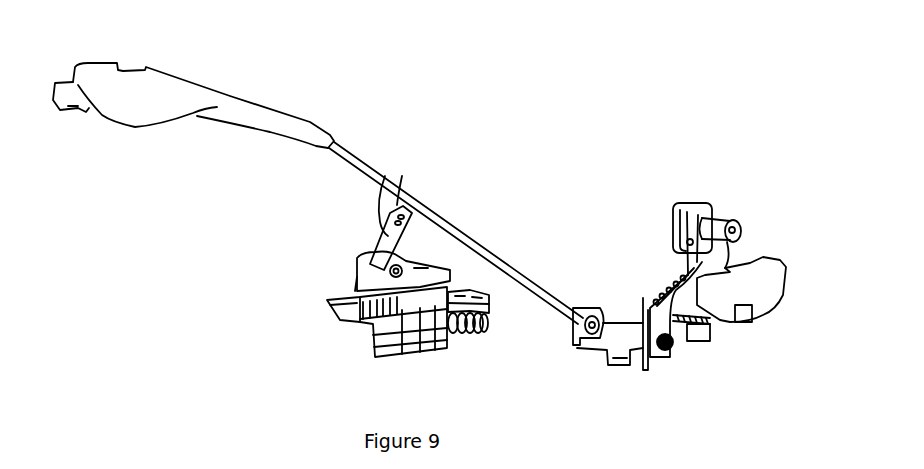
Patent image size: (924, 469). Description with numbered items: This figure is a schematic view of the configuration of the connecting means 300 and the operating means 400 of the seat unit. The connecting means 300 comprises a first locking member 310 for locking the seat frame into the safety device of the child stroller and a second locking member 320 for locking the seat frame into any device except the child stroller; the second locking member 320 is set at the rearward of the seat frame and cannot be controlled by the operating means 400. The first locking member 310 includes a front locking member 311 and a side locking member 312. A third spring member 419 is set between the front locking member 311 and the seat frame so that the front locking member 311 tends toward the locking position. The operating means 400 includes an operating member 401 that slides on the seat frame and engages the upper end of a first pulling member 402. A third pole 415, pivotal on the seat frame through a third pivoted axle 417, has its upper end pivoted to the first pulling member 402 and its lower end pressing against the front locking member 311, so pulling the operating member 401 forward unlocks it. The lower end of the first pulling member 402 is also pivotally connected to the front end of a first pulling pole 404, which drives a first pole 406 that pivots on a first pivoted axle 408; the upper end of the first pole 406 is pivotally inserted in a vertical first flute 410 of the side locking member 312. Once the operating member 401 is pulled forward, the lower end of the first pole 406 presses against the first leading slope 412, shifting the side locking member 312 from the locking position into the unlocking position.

The connecting means 300 is at (297, 348).
The first locking member 310 is at (345, 330).
The front locking member 311 is at (340, 297).
The side locking member 312 is at (735, 228).
The second locking member 320 is at (768, 287).
The operating means 400 is at (313, 94).
The operating member 401 is at (231, 116).
The first pulling member 402 is at (450, 232).
The first pulling pole 404 is at (622, 327).
The first pole 406 is at (684, 333).
The first pivoted axle 408 is at (645, 370).
The first flute 410 is at (697, 216).
The first leading slope 412 is at (672, 342).
The third pole 415 is at (387, 236).
The third pivoted axle 417 is at (357, 267).
The third spring member 419 is at (470, 335).